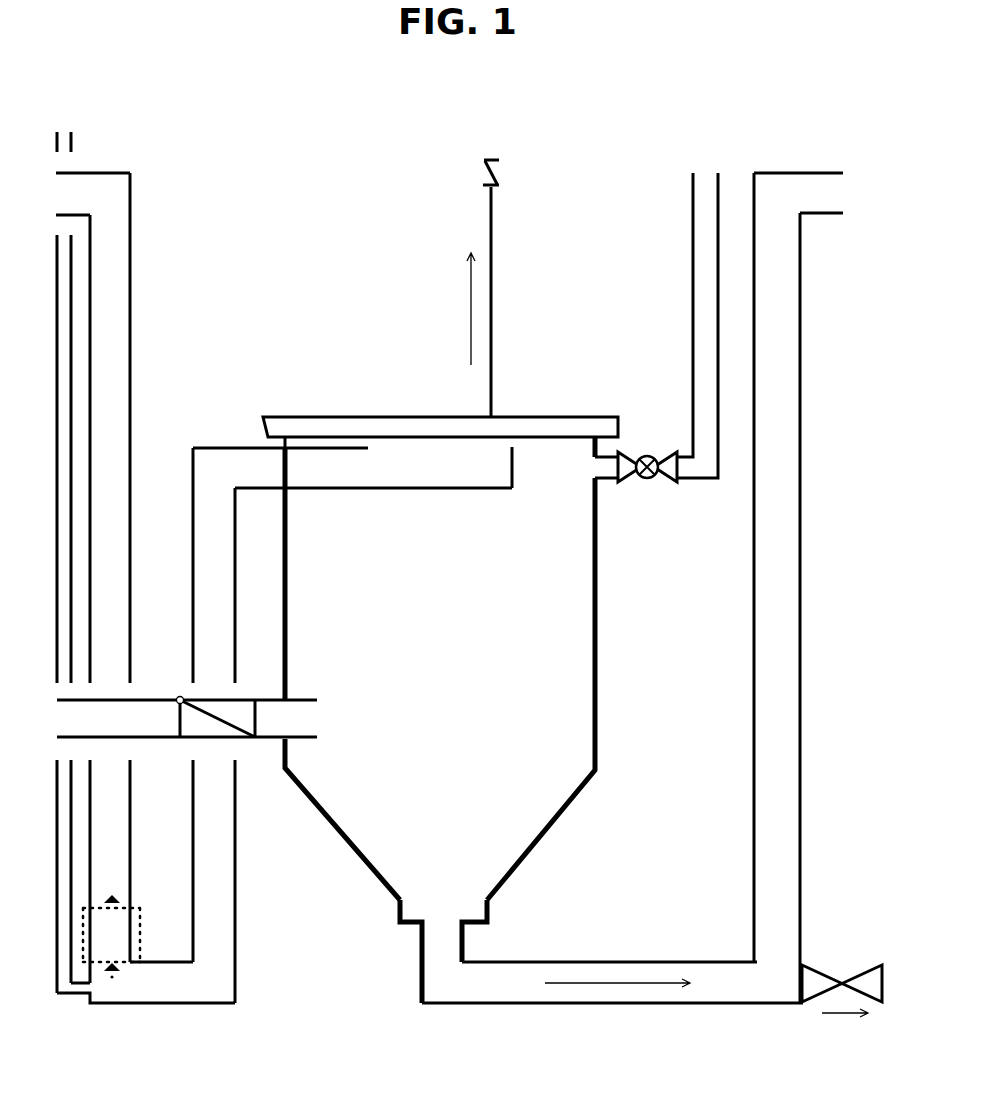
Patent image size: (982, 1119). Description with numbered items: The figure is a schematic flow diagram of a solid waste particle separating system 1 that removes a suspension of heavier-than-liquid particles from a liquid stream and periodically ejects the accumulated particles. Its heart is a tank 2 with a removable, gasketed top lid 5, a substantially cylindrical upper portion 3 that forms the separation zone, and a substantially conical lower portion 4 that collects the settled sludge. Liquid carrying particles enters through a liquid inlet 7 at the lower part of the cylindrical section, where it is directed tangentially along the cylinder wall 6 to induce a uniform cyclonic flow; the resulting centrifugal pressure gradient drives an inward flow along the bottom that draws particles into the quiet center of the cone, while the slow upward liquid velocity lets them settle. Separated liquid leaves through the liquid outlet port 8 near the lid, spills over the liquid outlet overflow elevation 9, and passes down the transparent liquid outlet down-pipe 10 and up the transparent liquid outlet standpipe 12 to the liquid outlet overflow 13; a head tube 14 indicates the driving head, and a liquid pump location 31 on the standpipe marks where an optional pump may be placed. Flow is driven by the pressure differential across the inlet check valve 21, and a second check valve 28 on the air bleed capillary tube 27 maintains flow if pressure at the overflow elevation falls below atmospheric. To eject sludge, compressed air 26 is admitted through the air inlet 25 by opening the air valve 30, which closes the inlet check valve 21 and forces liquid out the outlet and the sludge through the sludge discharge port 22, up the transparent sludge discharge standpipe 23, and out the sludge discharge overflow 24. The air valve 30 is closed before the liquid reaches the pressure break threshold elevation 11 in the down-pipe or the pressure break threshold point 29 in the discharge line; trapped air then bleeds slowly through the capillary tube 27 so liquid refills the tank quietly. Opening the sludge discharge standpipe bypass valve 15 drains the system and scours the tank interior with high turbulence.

The solid waste particle separating system 1 is at (289, 235).
The tank 2 is at (455, 656).
The cylindrical upper portion 3 is at (439, 559).
The conical lower portion 4 is at (506, 832).
The top lid 5 is at (532, 433).
The cylinder wall 6 is at (592, 718).
The liquid inlet 7 is at (344, 721).
The liquid outlet port 8 is at (457, 462).
The liquid outlet overflow elevation 9 is at (258, 471).
The liquid outlet down-pipe 10 is at (232, 564).
The pressure break threshold elevation 11 is at (165, 966).
The liquid outlet standpipe 12 is at (128, 564).
The liquid outlet overflow 13 is at (124, 211).
The head tube 14 is at (70, 1002).
The sludge discharge standpipe bypass valve 15 is at (842, 983).
The check valve 21 is at (231, 711).
The sludge discharge port 22 is at (460, 931).
The sludge discharge standpipe 23 is at (798, 564).
The sludge discharge overflow 24 is at (832, 196).
The air inlet 25 is at (593, 471).
The compressed air 26 is at (695, 279).
The air bleed capillary tube 27 is at (502, 279).
The check valve 28 is at (507, 177).
The pressure break threshold point 29 is at (506, 972).
The air valve 30 is at (651, 444).
The liquid pump location 31 is at (124, 928).